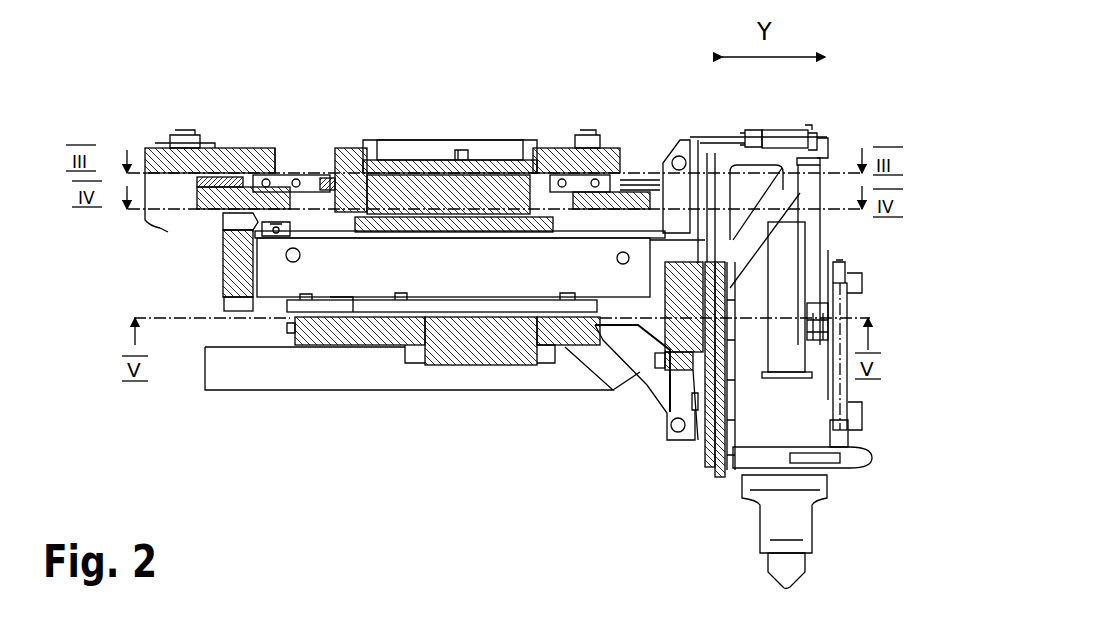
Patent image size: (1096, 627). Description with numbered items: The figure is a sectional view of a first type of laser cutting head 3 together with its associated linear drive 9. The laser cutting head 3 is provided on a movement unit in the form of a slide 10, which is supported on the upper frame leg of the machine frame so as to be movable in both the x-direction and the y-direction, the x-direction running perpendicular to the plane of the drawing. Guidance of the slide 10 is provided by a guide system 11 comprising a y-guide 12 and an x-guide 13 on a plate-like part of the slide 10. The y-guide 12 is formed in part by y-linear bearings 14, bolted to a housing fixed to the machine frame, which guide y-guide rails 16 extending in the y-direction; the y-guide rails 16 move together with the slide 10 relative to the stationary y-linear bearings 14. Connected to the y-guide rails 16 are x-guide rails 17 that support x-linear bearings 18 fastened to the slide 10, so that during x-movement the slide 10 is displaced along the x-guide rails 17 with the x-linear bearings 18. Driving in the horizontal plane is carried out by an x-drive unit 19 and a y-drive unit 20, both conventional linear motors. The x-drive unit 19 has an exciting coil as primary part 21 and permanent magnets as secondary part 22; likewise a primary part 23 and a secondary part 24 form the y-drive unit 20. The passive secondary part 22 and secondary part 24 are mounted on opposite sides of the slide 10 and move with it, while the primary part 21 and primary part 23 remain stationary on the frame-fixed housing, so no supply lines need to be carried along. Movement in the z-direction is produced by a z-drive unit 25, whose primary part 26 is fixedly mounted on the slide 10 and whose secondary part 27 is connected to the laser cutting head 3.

The y-guide rail 16 is at (213, 181).
The y-linear bearing 14 is at (262, 176).
The y-guide 12 is at (283, 171).
The guide system 11 is at (318, 171).
The secondary part 24 is at (387, 218).
The primary part 23 is at (448, 190).
The y-drive unit 20 is at (488, 162).
The linear drive 9 is at (528, 173).
The x-guide 13 is at (258, 222).
The x-guide rail 17 is at (256, 227).
The x-linear bearing 18 is at (295, 227).
The slide 10 is at (518, 282).
The secondary part 22 is at (518, 309).
The x-drive unit 19 is at (420, 363).
The primary part 21 is at (458, 345).
The primary part 26 is at (660, 350).
The z-drive unit 25 is at (705, 370).
The secondary part 27 is at (698, 440).
The laser cutting head 3 is at (836, 515).